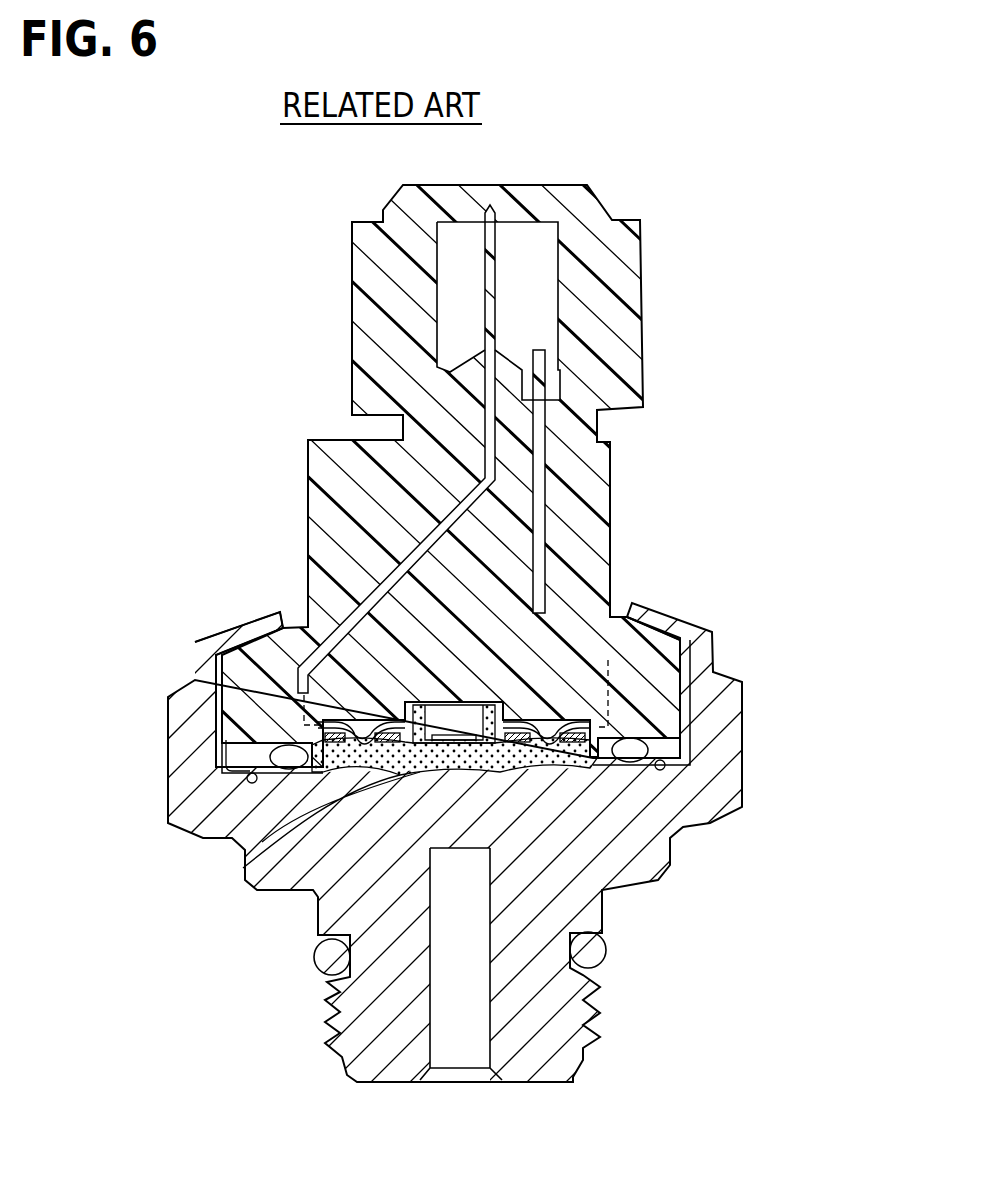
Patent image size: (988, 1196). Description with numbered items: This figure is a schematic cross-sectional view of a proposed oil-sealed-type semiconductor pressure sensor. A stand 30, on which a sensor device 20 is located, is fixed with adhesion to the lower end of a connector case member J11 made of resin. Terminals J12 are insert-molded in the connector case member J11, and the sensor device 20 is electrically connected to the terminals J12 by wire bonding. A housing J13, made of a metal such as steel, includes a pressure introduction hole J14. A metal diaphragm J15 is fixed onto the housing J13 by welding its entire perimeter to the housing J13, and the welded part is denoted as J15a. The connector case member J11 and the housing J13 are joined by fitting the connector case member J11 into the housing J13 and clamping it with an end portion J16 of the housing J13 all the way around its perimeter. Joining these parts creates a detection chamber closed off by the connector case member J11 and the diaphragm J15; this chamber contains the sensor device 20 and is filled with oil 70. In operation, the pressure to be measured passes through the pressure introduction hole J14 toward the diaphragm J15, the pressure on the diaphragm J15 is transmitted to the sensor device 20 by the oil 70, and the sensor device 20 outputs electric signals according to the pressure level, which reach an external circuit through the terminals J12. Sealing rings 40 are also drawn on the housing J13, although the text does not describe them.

The connector case member J11 is at (645, 375).
The terminals J12 is at (487, 262).
The housing J13 is at (168, 793).
The pressure introduction hole J14 is at (480, 1047).
The diaphragm J15 is at (470, 800).
The welded part J15a is at (212, 834).
The end portion J16 is at (270, 622).
The sensor device 20 is at (495, 703).
The stand 30 is at (460, 722).
The O-ring 40 is at (290, 770).
The oil 70 is at (300, 892).